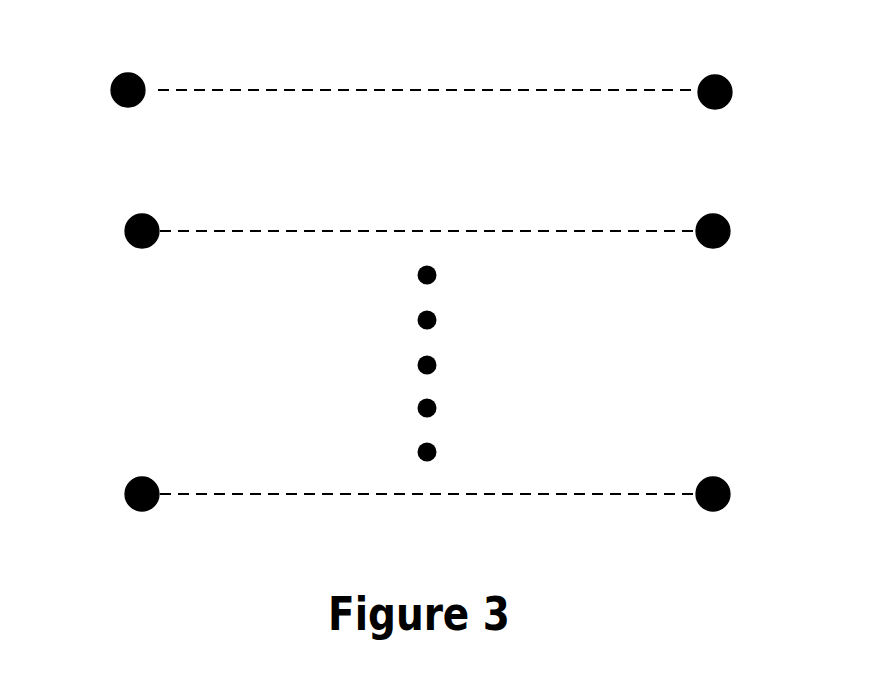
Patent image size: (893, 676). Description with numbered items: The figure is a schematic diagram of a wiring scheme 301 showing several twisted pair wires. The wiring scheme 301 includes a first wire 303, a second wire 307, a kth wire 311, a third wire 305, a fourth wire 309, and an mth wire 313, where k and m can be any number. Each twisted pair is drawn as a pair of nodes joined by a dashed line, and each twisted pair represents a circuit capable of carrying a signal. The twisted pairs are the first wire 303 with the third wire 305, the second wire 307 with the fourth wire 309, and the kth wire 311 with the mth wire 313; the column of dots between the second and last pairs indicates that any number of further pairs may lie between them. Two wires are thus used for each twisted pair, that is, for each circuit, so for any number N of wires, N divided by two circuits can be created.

The wiring scheme 301 is at (229, 36).
The first wire 303 is at (103, 89).
The third wire 305 is at (741, 90).
The second wire 307 is at (117, 232).
The fourth wire 309 is at (741, 231).
The kth wire 311 is at (117, 495).
The mth wire 313 is at (741, 494).